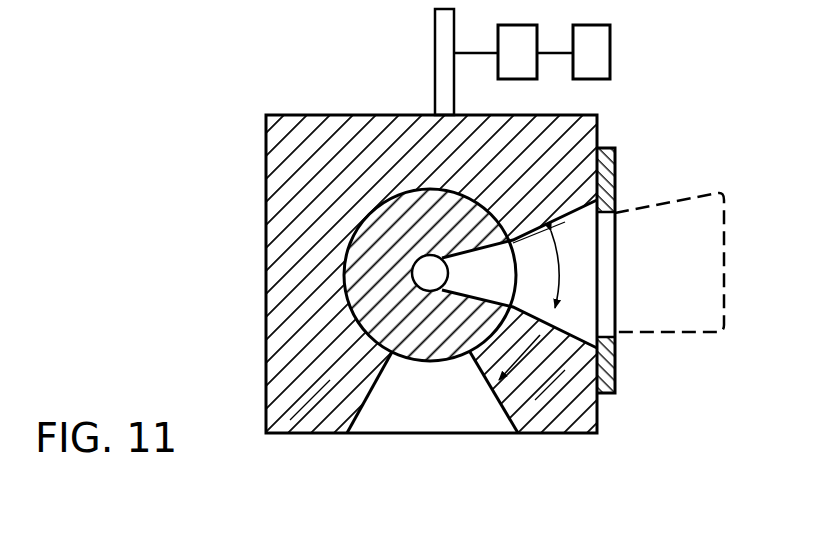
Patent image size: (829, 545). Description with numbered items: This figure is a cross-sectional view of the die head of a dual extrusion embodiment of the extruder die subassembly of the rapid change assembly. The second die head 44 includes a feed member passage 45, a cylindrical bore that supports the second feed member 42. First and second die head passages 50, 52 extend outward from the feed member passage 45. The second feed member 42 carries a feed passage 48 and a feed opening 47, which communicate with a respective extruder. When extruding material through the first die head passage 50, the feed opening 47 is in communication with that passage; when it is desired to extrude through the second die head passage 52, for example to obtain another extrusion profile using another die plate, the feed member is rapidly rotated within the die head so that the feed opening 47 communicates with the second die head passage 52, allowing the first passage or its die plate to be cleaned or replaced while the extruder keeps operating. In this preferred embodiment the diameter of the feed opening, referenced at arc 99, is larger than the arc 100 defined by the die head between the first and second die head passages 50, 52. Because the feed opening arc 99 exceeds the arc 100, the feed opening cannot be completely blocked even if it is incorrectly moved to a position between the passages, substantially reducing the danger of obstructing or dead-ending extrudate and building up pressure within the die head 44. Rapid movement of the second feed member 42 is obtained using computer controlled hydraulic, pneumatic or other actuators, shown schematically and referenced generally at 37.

The actuators 37 is at (602, 10).
The second feed member 42 is at (380, 262).
The second die head 44 is at (567, 410).
The feed member passage 45 is at (370, 230).
The feed opening 47 is at (340, 330).
The feed passage 48 is at (477, 300).
The first die head passage 50 is at (585, 226).
The second die head passage 52 is at (440, 400).
The feed opening arc 99 is at (557, 268).
The arc between die head passages 100 is at (523, 357).